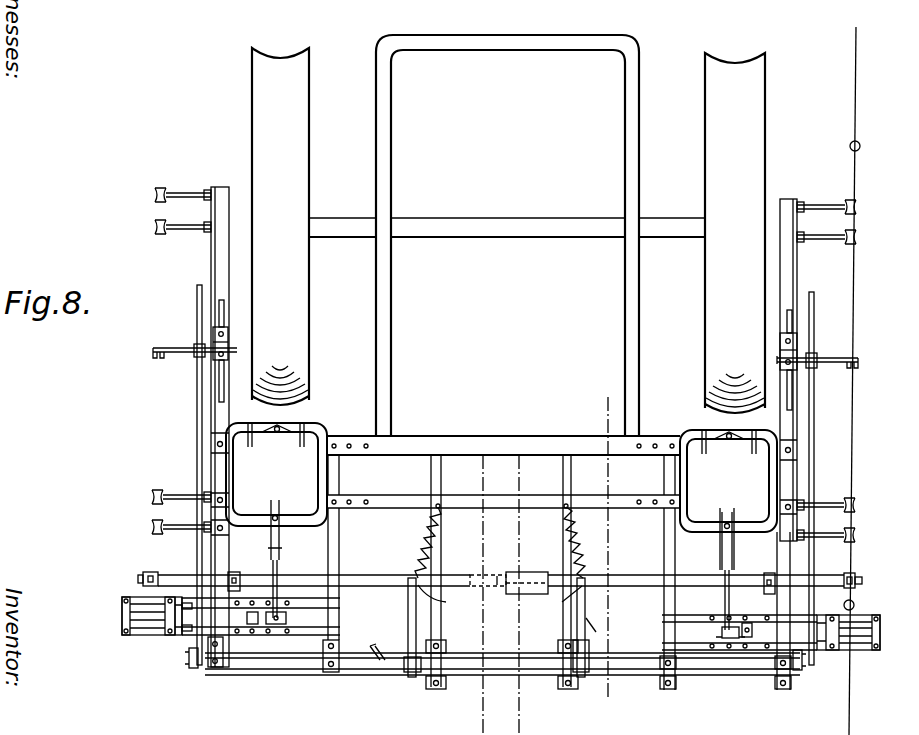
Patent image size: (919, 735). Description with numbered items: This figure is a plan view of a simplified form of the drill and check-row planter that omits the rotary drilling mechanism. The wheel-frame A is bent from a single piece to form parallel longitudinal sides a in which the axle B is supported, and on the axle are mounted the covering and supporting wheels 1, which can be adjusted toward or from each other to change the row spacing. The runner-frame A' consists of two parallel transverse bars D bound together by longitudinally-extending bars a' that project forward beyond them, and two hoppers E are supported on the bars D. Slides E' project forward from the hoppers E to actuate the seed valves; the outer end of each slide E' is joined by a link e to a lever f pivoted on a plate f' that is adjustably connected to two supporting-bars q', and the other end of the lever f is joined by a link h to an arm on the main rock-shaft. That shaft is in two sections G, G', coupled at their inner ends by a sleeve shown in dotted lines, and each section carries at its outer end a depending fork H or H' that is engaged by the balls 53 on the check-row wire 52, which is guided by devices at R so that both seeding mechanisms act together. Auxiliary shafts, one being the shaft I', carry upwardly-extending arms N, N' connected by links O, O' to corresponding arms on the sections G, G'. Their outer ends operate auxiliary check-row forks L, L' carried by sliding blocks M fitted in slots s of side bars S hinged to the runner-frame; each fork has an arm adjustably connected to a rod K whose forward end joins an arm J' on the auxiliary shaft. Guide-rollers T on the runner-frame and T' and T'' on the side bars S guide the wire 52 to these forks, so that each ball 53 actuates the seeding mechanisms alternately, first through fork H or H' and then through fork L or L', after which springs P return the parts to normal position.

The covering and supporting wheel 1 is at (503, 230).
The wheel-frame A is at (507, 236).
The axle B is at (507, 217).
The longitudinal side a is at (478, 320).
The transverse bar D is at (545, 452).
The runner-frame A' is at (482, 572).
The longitudinally-extending bar a' is at (499, 572).
The hopper E is at (501, 477).
The slide E' is at (501, 535).
The link e is at (279, 574).
The side bar S is at (212, 266).
The guide or slot s is at (224, 322).
The sliding block M is at (230, 342).
The rod K is at (197, 457).
The auxiliary check-row fork L is at (182, 351).
The auxiliary check-row fork L' is at (830, 360).
The rollers T'' is at (170, 211).
The guide-roller T' is at (839, 222).
The guide-roller T is at (495, 516).
The depending fork H is at (140, 569).
The depending fork H' is at (859, 573).
The main rock-shaft section G is at (314, 570).
The main rock-shaft section G' is at (696, 572).
The link h is at (238, 590).
The spring P is at (424, 544).
The link O is at (404, 627).
The link O' is at (598, 627).
The supporting-bar q' is at (499, 624).
The lever f is at (505, 641).
The plate f' is at (461, 650).
The arm J' is at (499, 679).
The auxiliary shaft I' is at (502, 677).
The upwardly-extending arm N is at (378, 669).
The upwardly-extending arm N' is at (599, 634).
The guiding devices R is at (503, 636).
The check-row wire 52 is at (867, 381).
The ball 53 is at (861, 146).